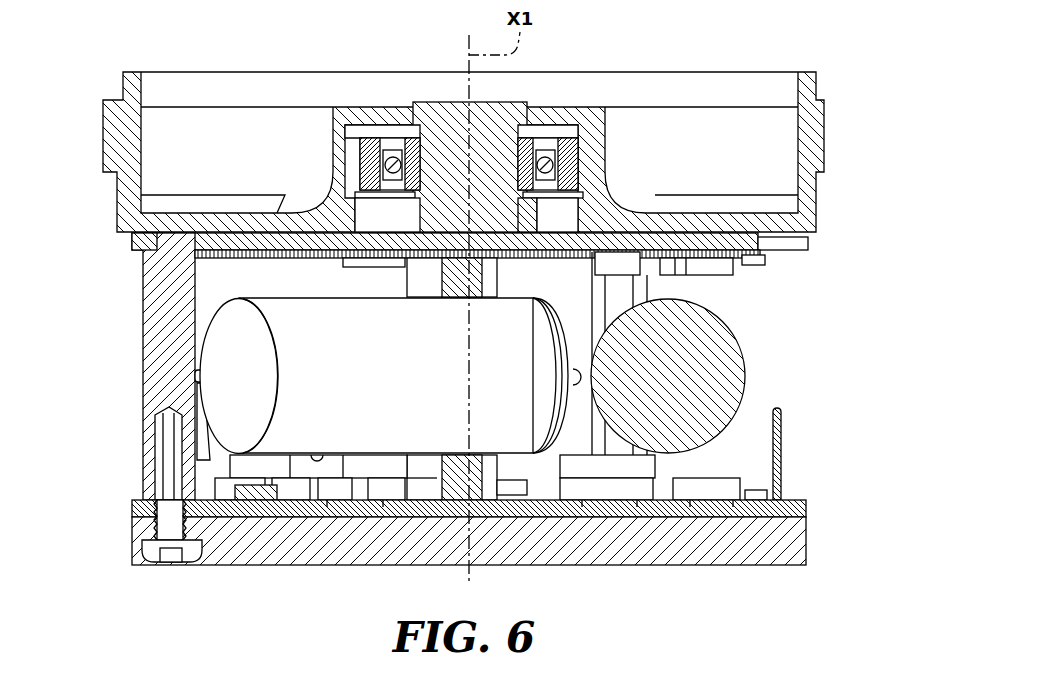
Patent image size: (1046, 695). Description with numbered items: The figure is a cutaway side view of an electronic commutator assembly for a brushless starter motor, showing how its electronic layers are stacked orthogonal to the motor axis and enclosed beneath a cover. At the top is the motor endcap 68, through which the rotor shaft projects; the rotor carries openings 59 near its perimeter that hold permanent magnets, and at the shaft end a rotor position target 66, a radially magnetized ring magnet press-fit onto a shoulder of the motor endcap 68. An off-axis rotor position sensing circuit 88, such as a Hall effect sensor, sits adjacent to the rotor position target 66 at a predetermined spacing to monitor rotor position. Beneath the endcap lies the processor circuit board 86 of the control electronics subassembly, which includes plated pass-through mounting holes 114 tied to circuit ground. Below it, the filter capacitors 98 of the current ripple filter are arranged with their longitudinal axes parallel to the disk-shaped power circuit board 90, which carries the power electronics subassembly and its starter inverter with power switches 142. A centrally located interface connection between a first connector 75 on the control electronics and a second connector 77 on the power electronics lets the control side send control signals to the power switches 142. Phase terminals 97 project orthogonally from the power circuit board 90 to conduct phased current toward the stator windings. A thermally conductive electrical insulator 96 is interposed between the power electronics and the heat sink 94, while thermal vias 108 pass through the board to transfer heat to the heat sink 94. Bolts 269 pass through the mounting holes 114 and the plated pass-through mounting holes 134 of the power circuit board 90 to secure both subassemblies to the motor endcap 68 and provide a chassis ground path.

The openings 59 is at (493, 138).
The rotor position target 66 is at (435, 228).
The motor endcap 68 is at (815, 143).
The rotor position sensing circuit 88 is at (530, 220).
The processor circuit board 86 is at (737, 262).
The plated pass-through mounting holes 114 is at (150, 243).
The bolts 269 is at (155, 335).
The filter capacitors 98 is at (364, 389).
The first connector 75 is at (487, 277).
The phase terminals 97 is at (782, 432).
The power switches 142 is at (739, 480).
The thermally conductive electrical insulator 96 is at (806, 515).
The heat sink 94 is at (806, 540).
The plated pass-through mounting holes 134 is at (142, 500).
The power circuit board 90 is at (258, 510).
The thermal vias 108 is at (383, 505).
The second connector 77 is at (404, 544).